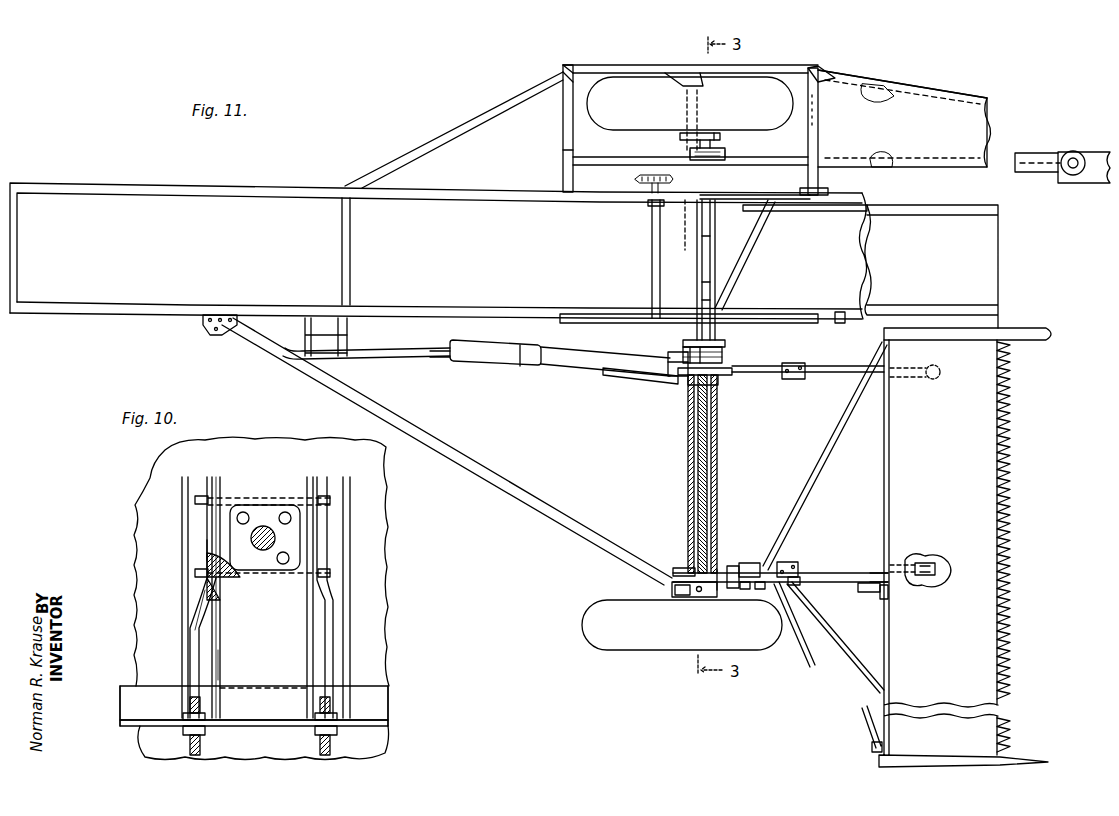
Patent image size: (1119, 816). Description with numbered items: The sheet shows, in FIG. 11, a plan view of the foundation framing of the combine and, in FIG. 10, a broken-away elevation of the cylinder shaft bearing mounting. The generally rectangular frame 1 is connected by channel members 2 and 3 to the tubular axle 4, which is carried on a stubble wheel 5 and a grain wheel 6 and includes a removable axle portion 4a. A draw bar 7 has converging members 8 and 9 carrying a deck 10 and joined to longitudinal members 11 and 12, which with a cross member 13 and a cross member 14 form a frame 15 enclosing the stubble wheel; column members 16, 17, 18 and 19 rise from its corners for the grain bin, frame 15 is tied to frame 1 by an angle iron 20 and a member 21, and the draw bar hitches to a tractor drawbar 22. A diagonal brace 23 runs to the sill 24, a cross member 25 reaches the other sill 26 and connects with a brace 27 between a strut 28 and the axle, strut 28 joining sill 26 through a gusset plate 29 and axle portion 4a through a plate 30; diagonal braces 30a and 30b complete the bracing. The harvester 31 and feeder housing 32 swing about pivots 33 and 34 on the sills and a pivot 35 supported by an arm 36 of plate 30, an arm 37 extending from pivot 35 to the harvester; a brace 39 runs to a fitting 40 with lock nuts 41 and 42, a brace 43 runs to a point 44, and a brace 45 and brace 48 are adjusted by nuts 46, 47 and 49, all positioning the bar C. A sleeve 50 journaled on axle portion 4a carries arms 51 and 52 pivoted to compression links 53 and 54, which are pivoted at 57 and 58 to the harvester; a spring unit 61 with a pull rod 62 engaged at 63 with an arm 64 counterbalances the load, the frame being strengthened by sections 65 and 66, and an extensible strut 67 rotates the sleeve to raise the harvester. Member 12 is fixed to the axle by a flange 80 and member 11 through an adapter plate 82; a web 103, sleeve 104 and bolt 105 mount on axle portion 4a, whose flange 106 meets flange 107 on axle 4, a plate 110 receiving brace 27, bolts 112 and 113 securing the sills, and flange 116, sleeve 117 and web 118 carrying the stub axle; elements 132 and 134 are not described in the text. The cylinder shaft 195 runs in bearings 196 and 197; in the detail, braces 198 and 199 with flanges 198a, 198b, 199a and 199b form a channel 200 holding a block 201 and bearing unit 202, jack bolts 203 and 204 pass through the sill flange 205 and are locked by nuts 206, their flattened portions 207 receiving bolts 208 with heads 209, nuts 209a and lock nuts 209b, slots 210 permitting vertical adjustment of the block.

In FIG. 11, the rectangular frame 1 is at (594, 300).
In FIG. 11, the channel member 2 is at (686, 222).
In FIG. 11, the channel member 3 is at (695, 310).
In FIG. 11, the axle 4 is at (697, 258).
In FIG. 11, the axle portion 4a is at (706, 520).
In FIG. 11, the stubble wheel 5 is at (690, 103).
In FIG. 11, the grain wheel 6 is at (682, 625).
In FIG. 11, the draw bar 7 is at (991, 113).
In FIG. 11, the converging member 8 is at (888, 80).
In FIG. 11, the converging member 9 is at (1076, 150).
In FIG. 11, the deck 10 is at (904, 118).
In FIG. 11, the longitudinal member 11 is at (778, 70).
In FIG. 11, the longitudinal member 12 is at (745, 160).
In FIG. 11, the cross member 13 is at (820, 80).
In FIG. 11, the cross member 14 is at (562, 128).
In FIG. 11, the frame 15 is at (688, 66).
In FIG. 11, the column member 16 is at (565, 70).
In FIG. 11, the column member 17 is at (812, 70).
In FIG. 11, the column member 18 is at (563, 150).
In FIG. 11, the column member 19 is at (819, 150).
In FIG. 11, the angle iron 20 is at (636, 179).
In FIG. 11, the member 21 is at (822, 190).
In FIG. 11, the tractor drawbar 22 is at (1092, 185).
In FIG. 11, the diagonal brace 23 is at (452, 150).
In FIG. 11, the sill 24 is at (285, 188).
In FIG. 11, the cross member 25 is at (350, 262).
In FIG. 11, the sill 26 is at (262, 304).
In FIG. 10, the sill 26 is at (382, 697).
In FIG. 11, the brace 27 is at (372, 346).
In FIG. 11, the strut 28 is at (410, 420).
In FIG. 11, the gusset plate 29 is at (206, 326).
In FIG. 11, the plate 30 is at (660, 566).
In FIG. 11, the diagonal brace 30a is at (780, 212).
In FIG. 11, the diagonal brace 30b is at (742, 250).
In FIG. 11, the harvester 31 is at (963, 553).
In FIG. 11, the feeder housing 32 is at (928, 260).
In FIG. 11, the pivot 33 is at (756, 195).
In FIG. 11, the pivot 34 is at (762, 312).
In FIG. 11, the pivot 35 is at (744, 590).
In FIG. 11, the arm 36 is at (718, 584).
In FIG. 11, the arm 37 is at (852, 572).
In FIG. 11, the brace 39 is at (805, 658).
In FIG. 11, the fitting 40 is at (862, 592).
In FIG. 11, the lock nut 41 is at (862, 574).
In FIG. 11, the lock nut 42 is at (886, 594).
In FIG. 11, the brace 43 is at (802, 468).
In FIG. 11, the point 44 is at (884, 334).
In FIG. 11, the brace 45 is at (856, 718).
In FIG. 11, the nut 46 is at (760, 590).
In FIG. 11, the nut 47 is at (785, 562).
In FIG. 11, the brace 48 is at (850, 660).
In FIG. 11, the nut 49 is at (795, 575).
In FIG. 11, the sleeve 50 is at (688, 480).
In FIG. 11, the arm 51 is at (735, 565).
In FIG. 11, the arm 52 is at (672, 377).
In FIG. 11, the compression link 53 is at (752, 562).
In FIG. 11, the compression link 54 is at (835, 373).
In FIG. 11, the pivot 57 is at (926, 556).
In FIG. 11, the pivot 58 is at (934, 380).
In FIG. 11, the spring unit 61 is at (500, 367).
In FIG. 11, the pull rod 62 is at (726, 356).
In FIG. 11, the pivot 63 is at (735, 371).
In FIG. 11, the arm 64 is at (720, 378).
In FIG. 11, the section 65 is at (345, 338).
In FIG. 11, the section 66 is at (305, 335).
In FIG. 11, the extensible strut 67 is at (622, 378).
In FIG. 11, the flange 80 is at (690, 154).
In FIG. 11, the adapter plate 82 is at (700, 74).
In FIG. 11, the web 103 is at (670, 588).
In FIG. 11, the sleeve 104 is at (676, 595).
In FIG. 11, the bolt 105 is at (697, 596).
In FIG. 11, the flange 106 is at (675, 350).
In FIG. 11, the flange 107 is at (690, 346).
In FIG. 11, the plate 110 is at (722, 342).
In FIG. 11, the bolt 112 is at (700, 283).
In FIG. 11, the bolt 113 is at (698, 236).
In FIG. 11, the flange 116 is at (680, 134).
In FIG. 11, the sleeve 117 is at (722, 138).
In FIG. 11, the web 118 is at (708, 133).
In FIG. 11, the cylinder body 132 is at (518, 344).
In FIG. 11, the piston rod 134 is at (598, 350).
In FIG. 11, the cylinder shaft 195 is at (652, 245).
In FIG. 10, the cylinder shaft 195 is at (300, 540).
In FIG. 11, the bearing 196 is at (656, 205).
In FIG. 11, the bearing 197 is at (655, 302).
In FIG. 10, the bearing 197 is at (225, 528).
In FIG. 10, the brace 198 is at (196, 586).
In FIG. 10, the flange 198a is at (190, 628).
In FIG. 10, the flange 198b is at (223, 668).
In FIG. 10, the brace 199 is at (340, 585).
In FIG. 10, the flange 199a is at (340, 620).
In FIG. 10, the flange 199b is at (306, 635).
In FIG. 10, the channel 200 is at (300, 678).
In FIG. 10, the block 201 is at (280, 504).
In FIG. 10, the bearing unit 202 is at (250, 507).
In FIG. 10, the jack bolt 203 is at (185, 660).
In FIG. 10, the jack bolt 204 is at (335, 645).
In FIG. 10, the flange 205 is at (264, 730).
In FIG. 10, the nut 206 is at (178, 712).
In FIG. 10, the flattened portion 207 is at (205, 548).
In FIG. 10, the bolt 208 is at (193, 500).
In FIG. 10, the head 209 is at (332, 500).
In FIG. 10, the nut 209a is at (200, 482).
In FIG. 10, the lock nut 209b is at (195, 512).
In FIG. 10, the slot 210 is at (226, 588).
In FIG. 11, the bar C is at (1025, 525).